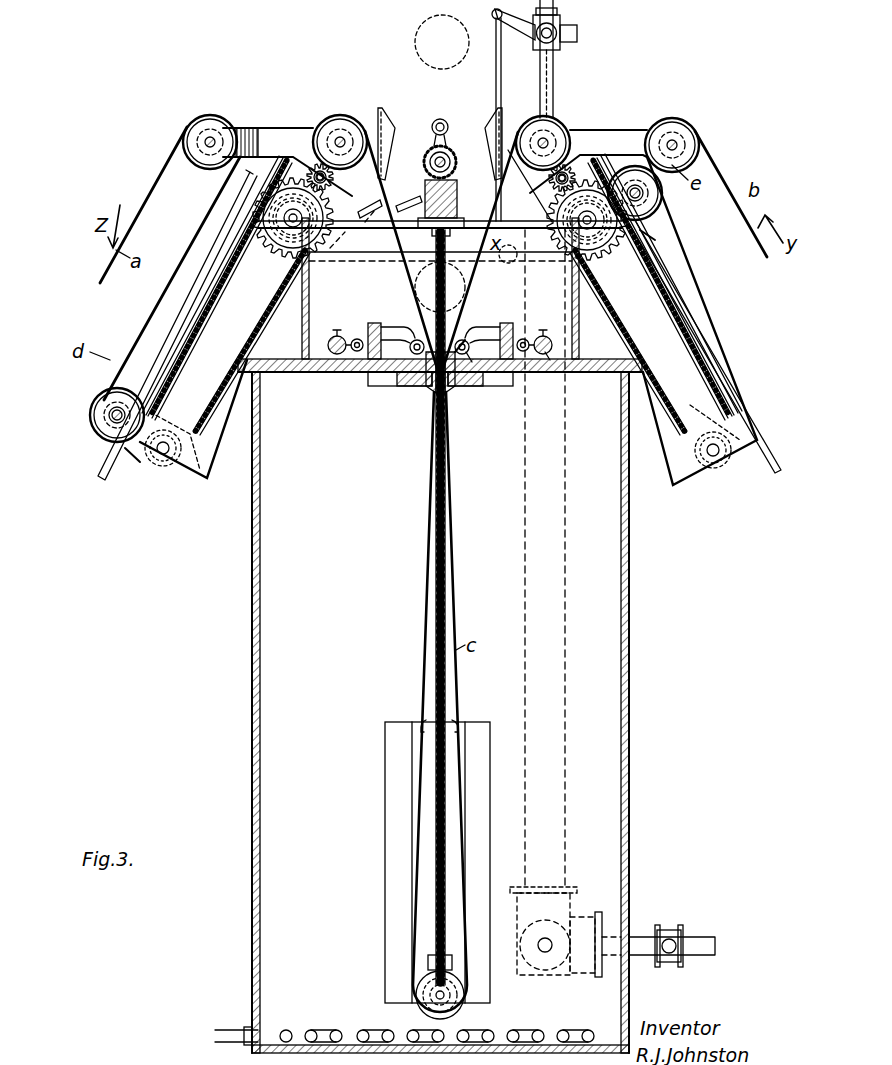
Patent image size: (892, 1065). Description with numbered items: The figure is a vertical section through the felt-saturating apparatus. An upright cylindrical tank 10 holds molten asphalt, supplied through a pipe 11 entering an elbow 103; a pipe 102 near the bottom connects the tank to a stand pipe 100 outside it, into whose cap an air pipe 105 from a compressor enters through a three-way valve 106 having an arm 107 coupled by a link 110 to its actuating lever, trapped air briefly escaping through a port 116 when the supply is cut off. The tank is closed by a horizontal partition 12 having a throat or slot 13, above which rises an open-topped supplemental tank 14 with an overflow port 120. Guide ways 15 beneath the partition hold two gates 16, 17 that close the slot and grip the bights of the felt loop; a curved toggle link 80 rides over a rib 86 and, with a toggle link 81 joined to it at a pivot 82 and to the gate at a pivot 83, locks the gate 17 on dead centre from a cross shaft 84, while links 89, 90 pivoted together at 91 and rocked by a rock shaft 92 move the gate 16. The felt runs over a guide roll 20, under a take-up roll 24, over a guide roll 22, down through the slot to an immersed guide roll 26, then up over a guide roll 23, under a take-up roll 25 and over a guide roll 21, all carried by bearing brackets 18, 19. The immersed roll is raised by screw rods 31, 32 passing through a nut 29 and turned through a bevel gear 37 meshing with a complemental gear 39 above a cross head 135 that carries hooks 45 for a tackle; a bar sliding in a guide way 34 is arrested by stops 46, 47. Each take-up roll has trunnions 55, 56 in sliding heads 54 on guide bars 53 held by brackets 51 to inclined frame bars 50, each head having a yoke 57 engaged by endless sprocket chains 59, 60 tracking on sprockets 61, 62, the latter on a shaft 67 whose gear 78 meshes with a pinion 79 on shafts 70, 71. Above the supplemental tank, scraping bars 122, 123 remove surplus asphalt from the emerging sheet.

The upright cylindrical tank 10 is at (627, 685).
The supply pipe 11 is at (648, 938).
The top wall or partition 12 is at (288, 373).
The throat or slot 13 is at (458, 362).
The supplemental tank 14 is at (302, 297).
The guide ways 15 is at (377, 386).
The gate or valve member 16 is at (430, 388).
The gate or valve member 17 is at (450, 392).
The bearing bracket 18 is at (630, 130).
The bearing bracket 19 is at (235, 130).
The guide roll 20 is at (690, 122).
The guide roll 21 is at (209, 116).
The guide roll 22 is at (558, 120).
The guide roll 23 is at (348, 115).
The take-up roll 24 is at (652, 203).
The take-up roll 25 is at (123, 390).
The immersed guide roll 26 is at (493, 1013).
The nut 29 is at (427, 963).
The screw rod 31 is at (447, 622).
The screw rod 32 is at (470, 135).
The guide way 34 is at (385, 842).
The bevel gear 37 is at (458, 165).
The complemental gear 39 is at (424, 160).
The eyes or hooks 45 is at (437, 120).
The stop or lug 46 is at (462, 726).
The stop or lug 47 is at (418, 728).
The inner frame bar 50 is at (199, 482).
The bracket 51 is at (185, 425).
The guide bar 53 is at (100, 478).
The sliding head 54 is at (128, 462).
The trunnion 55 is at (642, 194).
The trunnion 56 is at (112, 418).
The yoke 57 is at (548, 336).
The sprocket chain 59 is at (200, 347).
The sprocket chain 60 is at (700, 375).
The sprocket 61 is at (160, 460).
The sprocket 62 is at (262, 195).
The shaft 67 is at (290, 218).
The shaft 70 is at (570, 168).
The shaft 71 is at (320, 165).
The gear 78 is at (283, 245).
The pinion 79 is at (310, 170).
The toggle link 80 is at (485, 324).
The toggle link 81 is at (540, 334).
The pivot 82 is at (527, 355).
The pivot 83 is at (468, 368).
The cross shaft 84 is at (548, 360).
The rib 86 is at (377, 320).
The toggle link 89 is at (398, 327).
The toggle link 90 is at (340, 334).
The pivot 91 is at (357, 353).
The rock shaft 92 is at (340, 360).
The stand pipe 100 is at (565, 655).
The pipe 102 is at (544, 955).
The elbow 103 is at (571, 975).
The air pipe 105 is at (553, 76).
The valve 106 is at (561, 25).
The arm 107 is at (527, 27).
The link 110 is at (505, 104).
The port 116 is at (577, 36).
The overflow port 120 is at (520, 252).
The scraping bar 122 is at (372, 218).
The scraping bar 123 is at (390, 200).
The cross head 135 is at (458, 208).